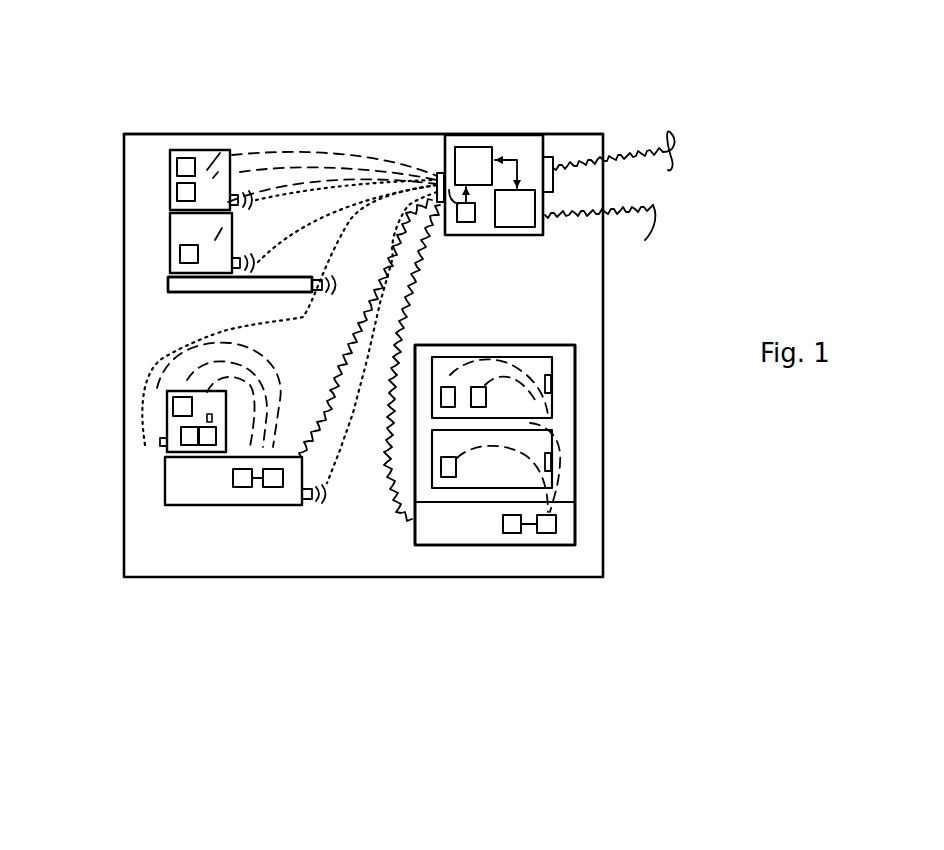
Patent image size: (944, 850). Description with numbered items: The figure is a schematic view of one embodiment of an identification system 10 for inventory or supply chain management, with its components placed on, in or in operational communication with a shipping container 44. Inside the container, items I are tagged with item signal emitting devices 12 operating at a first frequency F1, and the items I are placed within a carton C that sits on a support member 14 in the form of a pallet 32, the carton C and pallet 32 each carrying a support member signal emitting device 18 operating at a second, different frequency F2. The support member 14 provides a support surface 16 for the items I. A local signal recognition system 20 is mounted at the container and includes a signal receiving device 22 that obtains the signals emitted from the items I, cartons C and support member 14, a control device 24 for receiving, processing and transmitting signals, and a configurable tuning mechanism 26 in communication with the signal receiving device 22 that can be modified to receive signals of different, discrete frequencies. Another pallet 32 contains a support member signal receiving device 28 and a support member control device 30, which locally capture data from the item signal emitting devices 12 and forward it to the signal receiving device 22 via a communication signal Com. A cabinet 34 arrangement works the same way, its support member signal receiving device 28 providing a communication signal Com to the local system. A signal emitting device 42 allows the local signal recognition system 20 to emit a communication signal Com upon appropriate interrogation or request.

The identification system 10 is at (620, 37).
The item signal emitting device 12 is at (209, 150).
The support member 14 is at (160, 483).
The support surface 16 is at (280, 277).
The support member signal emitting device 18 is at (310, 292).
The local signal recognition system 20 is at (490, 130).
The signal receiving device 22 is at (462, 147).
The control device 24 is at (533, 228).
The configurable tuning mechanism 26 is at (468, 222).
The support member signal receiving device 28 is at (243, 488).
The support member control device 30 is at (277, 488).
The pallet 32 is at (178, 293).
The cabinet 34 is at (562, 345).
The signal emitting device 42 is at (556, 136).
The shipping container 44 is at (412, 134).
The carton C is at (202, 150).
The item I is at (172, 190).
The first frequency F1 is at (157, 388).
The second frequency F2 is at (338, 462).
The communication signal Com is at (636, 160).